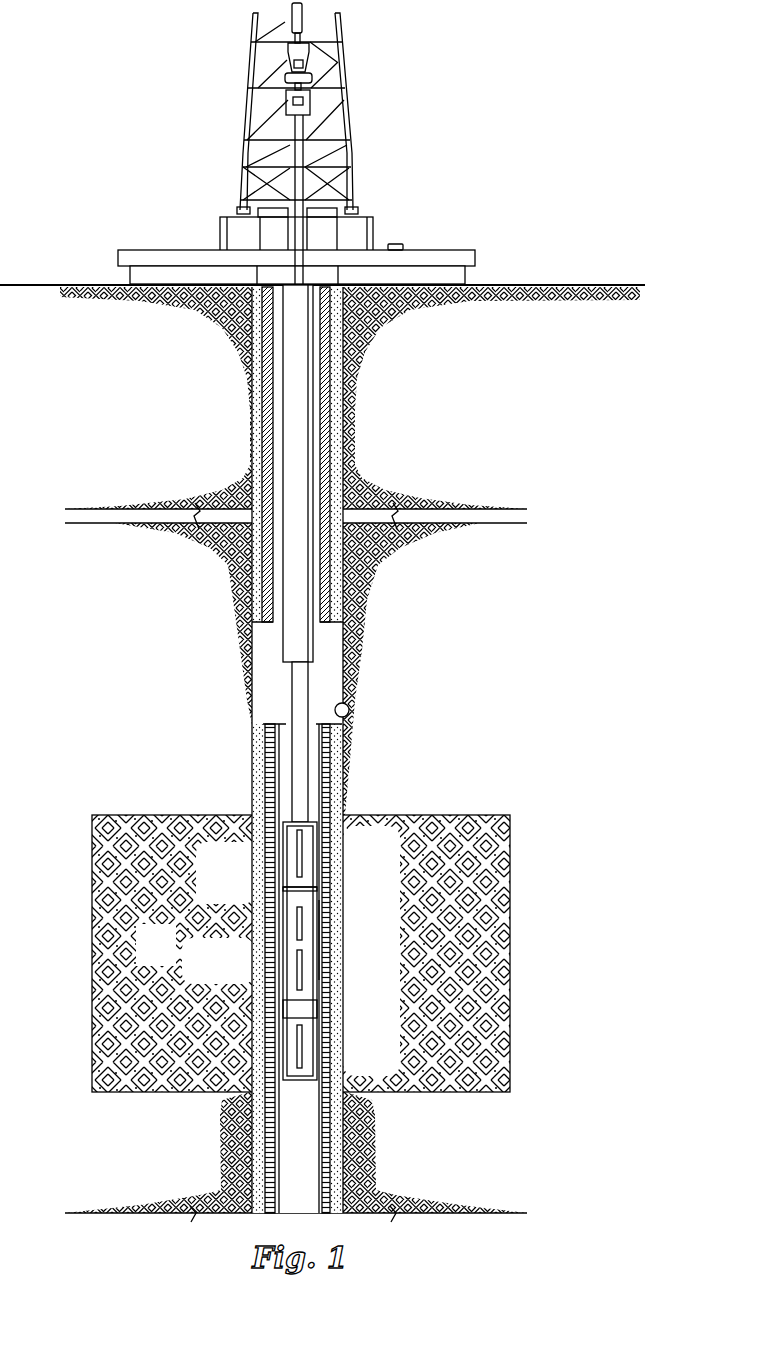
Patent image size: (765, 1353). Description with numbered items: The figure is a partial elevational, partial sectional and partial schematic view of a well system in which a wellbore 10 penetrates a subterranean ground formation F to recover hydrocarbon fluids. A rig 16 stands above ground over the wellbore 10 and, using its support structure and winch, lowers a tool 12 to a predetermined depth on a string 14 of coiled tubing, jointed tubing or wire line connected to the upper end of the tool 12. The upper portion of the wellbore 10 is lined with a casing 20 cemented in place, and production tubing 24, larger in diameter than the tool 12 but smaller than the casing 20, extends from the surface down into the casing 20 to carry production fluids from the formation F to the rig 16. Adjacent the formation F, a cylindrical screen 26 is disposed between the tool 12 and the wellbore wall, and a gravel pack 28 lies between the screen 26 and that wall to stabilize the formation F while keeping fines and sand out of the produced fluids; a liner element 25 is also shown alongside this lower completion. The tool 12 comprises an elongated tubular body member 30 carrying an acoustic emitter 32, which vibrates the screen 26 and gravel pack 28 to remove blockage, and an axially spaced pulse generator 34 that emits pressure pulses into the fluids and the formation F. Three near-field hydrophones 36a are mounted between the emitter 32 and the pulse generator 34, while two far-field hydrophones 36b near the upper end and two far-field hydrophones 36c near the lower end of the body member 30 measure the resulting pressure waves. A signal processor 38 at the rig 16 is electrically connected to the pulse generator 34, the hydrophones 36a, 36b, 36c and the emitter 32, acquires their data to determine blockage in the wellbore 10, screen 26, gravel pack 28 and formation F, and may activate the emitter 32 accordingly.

The wellbore 10 is at (349, 709).
The tool 12 is at (298, 987).
The string 14 is at (297, 687).
The rig 16 is at (186, 84).
The casing 20 is at (336, 413).
The production tubing 24 is at (293, 643).
The liner 25 is at (326, 935).
The cylindrical screen 26 is at (263, 732).
The gravel pack 28 is at (338, 768).
The tubular body member 30 is at (283, 878).
The acoustic emitter 32 is at (308, 1008).
The pulse generator 34 is at (300, 898).
The near-field hydrophones 36a is at (292, 962).
The far field hydrophones 36b is at (297, 850).
The far field hydrophones 36c is at (297, 1050).
The signal processor 38 is at (400, 243).
The formation F is at (147, 956).